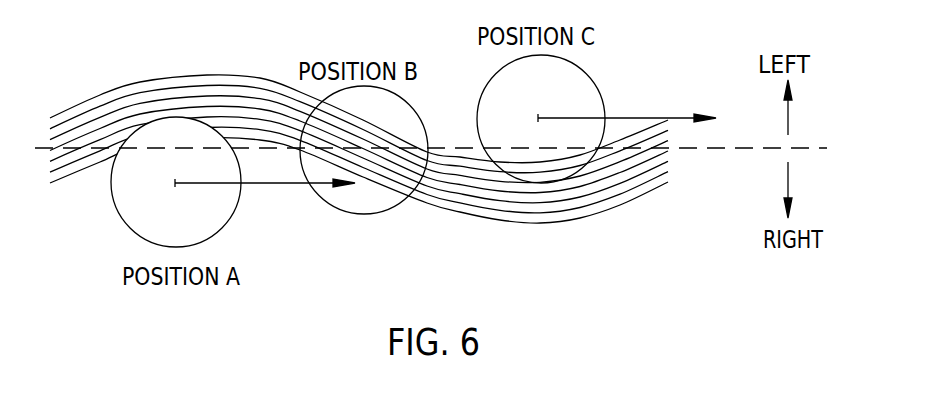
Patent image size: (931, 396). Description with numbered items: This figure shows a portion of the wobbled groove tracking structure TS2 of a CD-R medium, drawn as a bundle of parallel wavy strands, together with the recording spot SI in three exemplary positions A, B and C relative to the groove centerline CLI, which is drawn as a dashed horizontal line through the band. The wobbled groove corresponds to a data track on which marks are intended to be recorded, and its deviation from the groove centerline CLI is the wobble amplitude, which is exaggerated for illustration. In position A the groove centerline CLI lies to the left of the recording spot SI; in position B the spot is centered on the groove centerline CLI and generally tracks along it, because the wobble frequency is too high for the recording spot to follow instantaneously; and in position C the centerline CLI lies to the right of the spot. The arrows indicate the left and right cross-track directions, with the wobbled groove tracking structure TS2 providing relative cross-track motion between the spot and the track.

The recording spot SI is at (118, 213).
The wobbled groove tracking structure TS2 is at (546, 224).
The groove centerline CLI is at (728, 150).